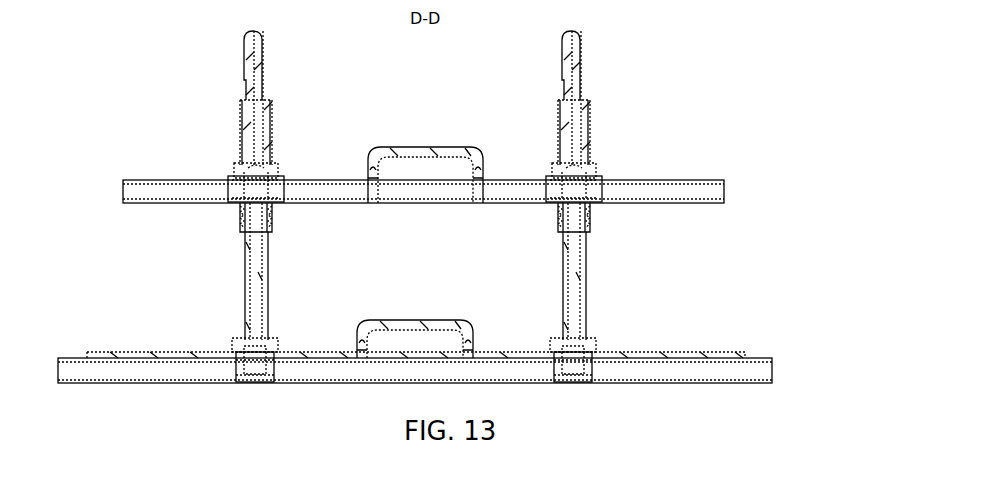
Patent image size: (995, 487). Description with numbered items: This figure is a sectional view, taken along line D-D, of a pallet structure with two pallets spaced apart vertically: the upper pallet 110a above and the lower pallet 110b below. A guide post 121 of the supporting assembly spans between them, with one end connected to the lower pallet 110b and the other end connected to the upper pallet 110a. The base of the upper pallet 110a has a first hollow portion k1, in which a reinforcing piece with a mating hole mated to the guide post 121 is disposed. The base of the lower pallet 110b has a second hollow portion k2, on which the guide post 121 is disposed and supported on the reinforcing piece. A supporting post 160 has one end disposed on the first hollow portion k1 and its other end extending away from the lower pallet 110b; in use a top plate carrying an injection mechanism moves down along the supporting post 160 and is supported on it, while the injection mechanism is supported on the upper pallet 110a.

The upper pallet 110a is at (665, 180).
The lower pallet 110b is at (748, 360).
The supporting post 160 is at (247, 104).
The guide post 121 is at (245, 282).
The first hollow portion k1 is at (598, 180).
The second hollow portion k2 is at (598, 358).